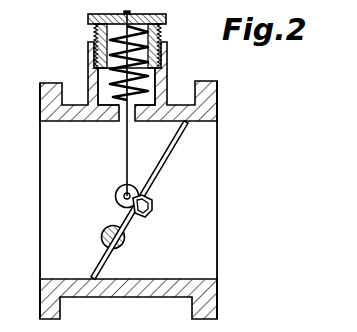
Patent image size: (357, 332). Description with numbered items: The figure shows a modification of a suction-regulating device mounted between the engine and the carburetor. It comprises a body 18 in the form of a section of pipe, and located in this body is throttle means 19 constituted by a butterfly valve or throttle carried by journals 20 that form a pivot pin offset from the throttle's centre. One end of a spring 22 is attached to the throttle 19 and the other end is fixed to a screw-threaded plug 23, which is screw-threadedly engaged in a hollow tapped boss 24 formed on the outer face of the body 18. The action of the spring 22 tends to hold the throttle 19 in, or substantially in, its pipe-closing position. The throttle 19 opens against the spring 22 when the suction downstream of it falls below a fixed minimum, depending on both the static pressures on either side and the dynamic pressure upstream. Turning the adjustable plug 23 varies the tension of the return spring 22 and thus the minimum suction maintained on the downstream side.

The body 18 is at (217, 80).
The throttle means 19 is at (166, 152).
The journals 20 is at (115, 250).
The spring 22 is at (163, 62).
The screw-threaded plug 23 is at (89, 18).
The hollow tapped boss 24 is at (97, 70).